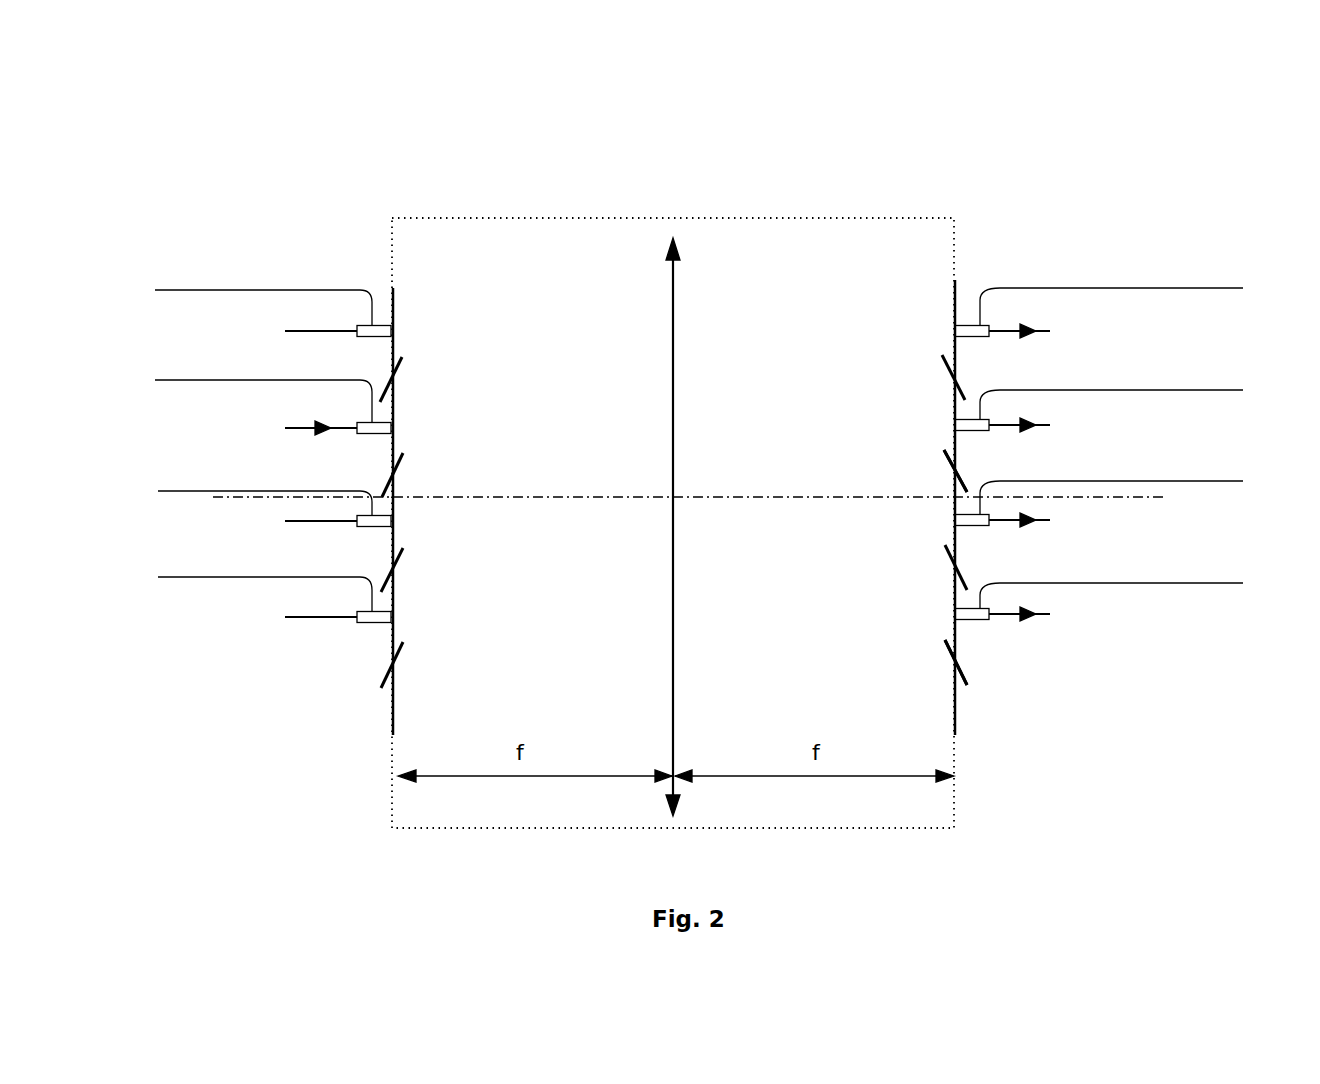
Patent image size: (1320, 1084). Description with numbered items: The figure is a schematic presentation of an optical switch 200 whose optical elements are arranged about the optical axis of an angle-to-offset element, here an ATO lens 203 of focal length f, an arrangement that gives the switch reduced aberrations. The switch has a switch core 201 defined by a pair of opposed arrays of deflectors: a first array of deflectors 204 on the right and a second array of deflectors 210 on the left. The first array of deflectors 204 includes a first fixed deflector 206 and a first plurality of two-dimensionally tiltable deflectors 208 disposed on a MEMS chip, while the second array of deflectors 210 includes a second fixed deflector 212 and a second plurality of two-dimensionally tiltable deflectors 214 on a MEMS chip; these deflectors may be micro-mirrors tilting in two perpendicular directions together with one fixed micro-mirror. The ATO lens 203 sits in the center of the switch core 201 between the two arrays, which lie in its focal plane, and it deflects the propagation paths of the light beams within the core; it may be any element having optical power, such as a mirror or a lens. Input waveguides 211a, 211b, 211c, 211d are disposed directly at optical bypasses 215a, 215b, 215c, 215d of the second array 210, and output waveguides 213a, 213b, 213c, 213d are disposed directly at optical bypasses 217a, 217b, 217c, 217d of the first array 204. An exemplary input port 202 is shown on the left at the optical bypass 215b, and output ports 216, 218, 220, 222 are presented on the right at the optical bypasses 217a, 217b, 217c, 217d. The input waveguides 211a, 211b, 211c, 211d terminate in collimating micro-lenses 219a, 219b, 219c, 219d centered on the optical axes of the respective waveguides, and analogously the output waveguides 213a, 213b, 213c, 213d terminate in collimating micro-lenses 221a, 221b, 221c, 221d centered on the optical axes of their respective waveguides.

The optical switch 200 is at (912, 168).
The switch core 201 is at (433, 218).
The input port 202 is at (385, 436).
The ATO lens 203 is at (673, 285).
The first array of deflectors 204 is at (955, 296).
The first fixed deflector 206 is at (955, 485).
The first plurality of 2D tiltable deflectors 208 is at (952, 650).
The second array of deflectors 210 is at (393, 296).
The second fixed deflector 212 is at (398, 492).
The second plurality of 2D tiltable deflectors 214 is at (402, 655).
The output port 216 is at (990, 339).
The output port 218 is at (990, 433).
The output port 220 is at (990, 528).
The output port 222 is at (990, 622).
The optical bypass 215a is at (395, 329).
The optical bypass 215b is at (395, 426).
The optical bypass 215c is at (395, 519).
The optical bypass 215d is at (395, 614).
The input waveguide 211a is at (301, 331).
The input waveguide 211b is at (301, 428).
The input waveguide 211c is at (301, 521).
The input waveguide 211d is at (301, 617).
The micro-lens 219a is at (230, 304).
The micro-lens 219b is at (230, 396).
The micro-lens 219c is at (232, 497).
The micro-lens 219d is at (231, 589).
The optical bypass 217a is at (955, 328).
The optical bypass 217b is at (955, 422).
The optical bypass 217c is at (955, 518).
The optical bypass 217d is at (955, 612).
The output waveguide 213a is at (1047, 331).
The output waveguide 213b is at (1047, 425).
The output waveguide 213c is at (1047, 520).
The output waveguide 213d is at (1047, 614).
The micro-lens 221a is at (1144, 302).
The micro-lens 221b is at (1145, 400).
The micro-lens 221c is at (1145, 491).
The micro-lens 221d is at (1146, 589).